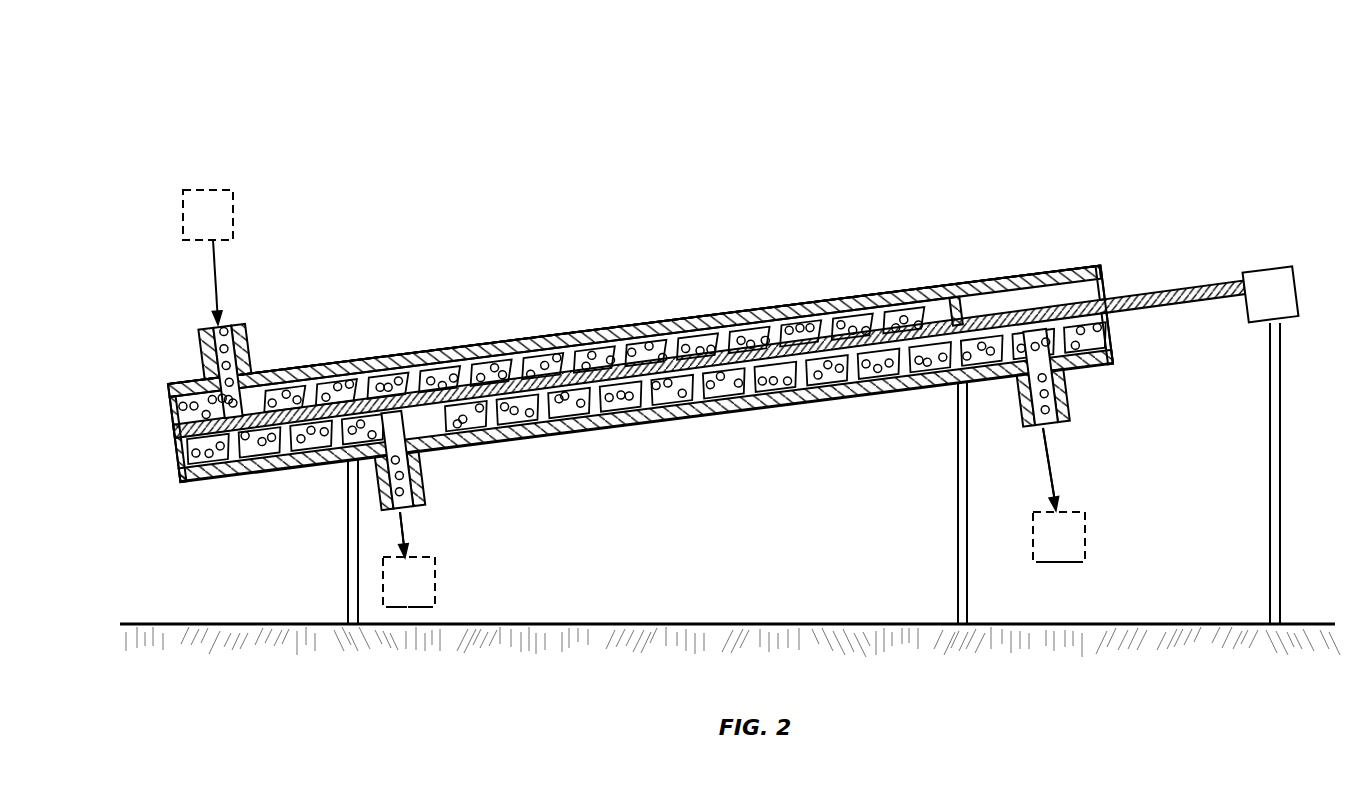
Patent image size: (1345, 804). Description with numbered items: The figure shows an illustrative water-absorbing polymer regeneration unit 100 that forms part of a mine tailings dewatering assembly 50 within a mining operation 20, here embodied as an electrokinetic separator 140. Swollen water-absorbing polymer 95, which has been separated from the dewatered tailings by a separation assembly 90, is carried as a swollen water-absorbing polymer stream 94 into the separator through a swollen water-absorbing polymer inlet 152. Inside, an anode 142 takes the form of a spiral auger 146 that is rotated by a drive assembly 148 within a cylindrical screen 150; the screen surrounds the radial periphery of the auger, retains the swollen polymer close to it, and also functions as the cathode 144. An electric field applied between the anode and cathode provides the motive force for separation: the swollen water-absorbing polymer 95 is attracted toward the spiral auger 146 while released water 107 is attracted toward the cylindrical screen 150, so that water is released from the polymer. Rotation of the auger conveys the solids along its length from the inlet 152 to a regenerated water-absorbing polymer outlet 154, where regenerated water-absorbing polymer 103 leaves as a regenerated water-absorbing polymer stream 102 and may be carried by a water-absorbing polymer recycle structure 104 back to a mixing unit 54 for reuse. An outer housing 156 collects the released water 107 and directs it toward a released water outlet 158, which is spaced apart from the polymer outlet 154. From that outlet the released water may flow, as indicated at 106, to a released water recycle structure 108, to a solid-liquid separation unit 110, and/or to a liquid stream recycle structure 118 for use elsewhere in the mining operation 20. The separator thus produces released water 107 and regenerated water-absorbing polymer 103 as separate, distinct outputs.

The mining operation 20 is at (528, 120).
The mine tailings dewatering assembly 50 is at (583, 134).
The water-absorbing polymer regeneration unit 100 is at (639, 145).
The electrokinetic separator 140 is at (602, 230).
The anode 142 is at (333, 370).
The cathode 144 is at (515, 338).
The spiral auger 146 is at (385, 383).
The cylindrical screen 150 is at (450, 360).
The outer housing 156 is at (574, 328).
The drive assembly 148 is at (1265, 268).
The swollen water-absorbing polymer inlet 152 is at (192, 335).
The regenerated water-absorbing polymer outlet 154 is at (1078, 422).
The released water outlet 158 is at (432, 504).
The separation assembly 90 is at (180, 206).
The swollen water-absorbing polymer stream 94 is at (226, 287).
The swollen water-absorbing polymer 95 is at (210, 259).
The product flow 106 is at (388, 527).
The released water 107 is at (404, 516).
The solid-liquid separation unit 110 is at (444, 592).
The liquid stream recycle structure 118 is at (393, 612).
The released water recycle structure 108 is at (417, 612).
The regenerated water-absorbing polymer stream 102 is at (1040, 444).
The regenerated water-absorbing polymer 103 is at (1052, 456).
The mixing unit 54 is at (1092, 530).
The water-absorbing polymer recycle structure 104 is at (1066, 572).